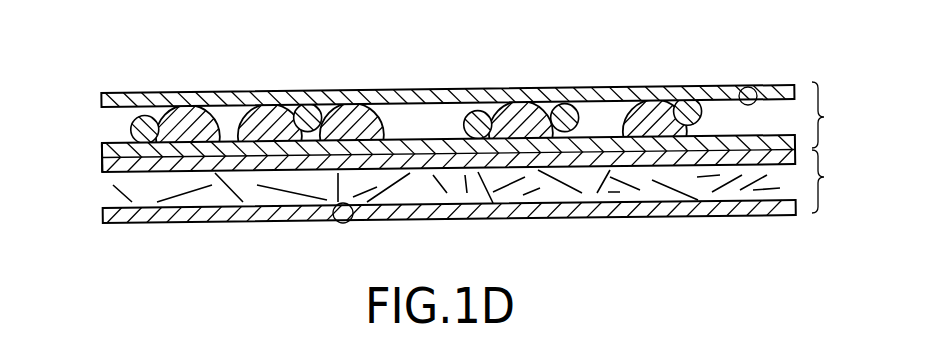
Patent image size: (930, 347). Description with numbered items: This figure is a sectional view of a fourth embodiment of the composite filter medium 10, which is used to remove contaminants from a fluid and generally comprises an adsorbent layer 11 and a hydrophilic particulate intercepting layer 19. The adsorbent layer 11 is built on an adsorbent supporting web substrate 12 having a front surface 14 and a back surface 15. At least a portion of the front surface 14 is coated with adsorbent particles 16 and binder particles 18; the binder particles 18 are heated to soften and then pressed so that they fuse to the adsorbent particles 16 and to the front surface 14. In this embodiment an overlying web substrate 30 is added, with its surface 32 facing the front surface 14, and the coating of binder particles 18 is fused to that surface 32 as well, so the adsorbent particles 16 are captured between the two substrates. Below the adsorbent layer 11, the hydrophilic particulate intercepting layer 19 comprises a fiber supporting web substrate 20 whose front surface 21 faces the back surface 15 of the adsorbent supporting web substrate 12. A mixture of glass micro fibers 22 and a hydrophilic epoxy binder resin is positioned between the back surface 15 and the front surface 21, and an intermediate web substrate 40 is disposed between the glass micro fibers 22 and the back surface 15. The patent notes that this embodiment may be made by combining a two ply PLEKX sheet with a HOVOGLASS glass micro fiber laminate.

The composite filter medium 10 is at (623, 48).
The adsorbent layer 11 is at (834, 108).
The adsorbent supporting web substrate 12 is at (437, 140).
The front surface 14 is at (235, 145).
The back surface 15 is at (102, 165).
The adsorbent particles 16 is at (381, 98).
The binder particles 18 is at (318, 104).
The hydrophilic particulate intercepting layer 19 is at (834, 173).
The fiber supporting web substrate 20 is at (725, 213).
The front surface 21 is at (350, 221).
The glass micro fibers 22 is at (277, 187).
The overlying web substrate 30 is at (778, 83).
The surface 32 is at (738, 87).
The intermediate web substrate 40 is at (643, 153).